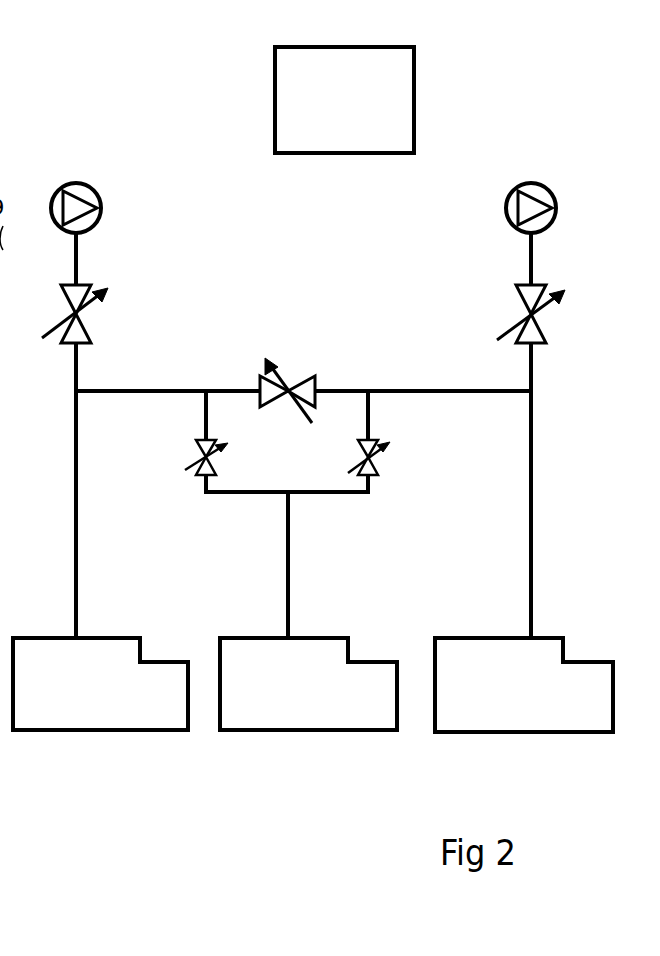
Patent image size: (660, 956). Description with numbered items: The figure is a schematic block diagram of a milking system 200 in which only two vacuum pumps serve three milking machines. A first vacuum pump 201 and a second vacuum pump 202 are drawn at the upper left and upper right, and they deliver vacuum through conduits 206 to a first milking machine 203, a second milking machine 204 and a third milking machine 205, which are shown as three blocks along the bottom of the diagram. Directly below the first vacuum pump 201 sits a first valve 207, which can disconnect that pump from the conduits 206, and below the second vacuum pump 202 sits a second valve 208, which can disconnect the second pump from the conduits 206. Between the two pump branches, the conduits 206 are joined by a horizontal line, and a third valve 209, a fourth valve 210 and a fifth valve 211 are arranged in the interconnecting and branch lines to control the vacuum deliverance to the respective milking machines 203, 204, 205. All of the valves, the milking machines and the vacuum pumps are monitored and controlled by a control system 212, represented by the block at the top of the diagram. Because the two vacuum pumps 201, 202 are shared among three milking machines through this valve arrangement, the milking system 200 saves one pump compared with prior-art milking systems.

The milking system 200 is at (637, 539).
The first vacuum pump 201 is at (80, 182).
The second vacuum pump 202 is at (553, 197).
The first milking machine 203 is at (137, 732).
The second milking machine 204 is at (335, 732).
The third milking machine 205 is at (525, 732).
The conduits 206 is at (77, 500).
The first valve 207 is at (88, 309).
The second valve 208 is at (543, 314).
The third valve 209 is at (292, 382).
The fourth valve 210 is at (200, 461).
The fifth valve 211 is at (378, 464).
The control system 212 is at (414, 97).